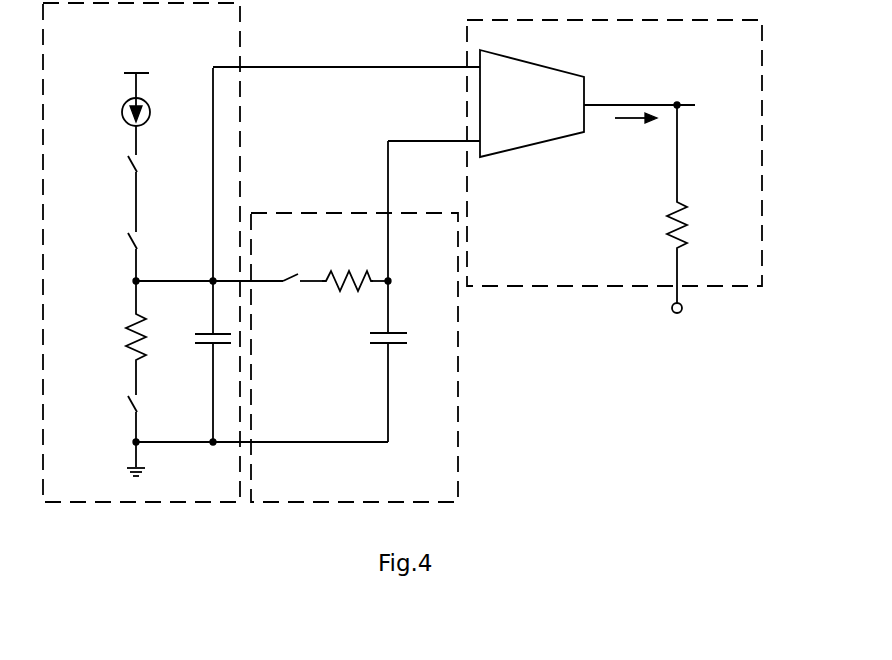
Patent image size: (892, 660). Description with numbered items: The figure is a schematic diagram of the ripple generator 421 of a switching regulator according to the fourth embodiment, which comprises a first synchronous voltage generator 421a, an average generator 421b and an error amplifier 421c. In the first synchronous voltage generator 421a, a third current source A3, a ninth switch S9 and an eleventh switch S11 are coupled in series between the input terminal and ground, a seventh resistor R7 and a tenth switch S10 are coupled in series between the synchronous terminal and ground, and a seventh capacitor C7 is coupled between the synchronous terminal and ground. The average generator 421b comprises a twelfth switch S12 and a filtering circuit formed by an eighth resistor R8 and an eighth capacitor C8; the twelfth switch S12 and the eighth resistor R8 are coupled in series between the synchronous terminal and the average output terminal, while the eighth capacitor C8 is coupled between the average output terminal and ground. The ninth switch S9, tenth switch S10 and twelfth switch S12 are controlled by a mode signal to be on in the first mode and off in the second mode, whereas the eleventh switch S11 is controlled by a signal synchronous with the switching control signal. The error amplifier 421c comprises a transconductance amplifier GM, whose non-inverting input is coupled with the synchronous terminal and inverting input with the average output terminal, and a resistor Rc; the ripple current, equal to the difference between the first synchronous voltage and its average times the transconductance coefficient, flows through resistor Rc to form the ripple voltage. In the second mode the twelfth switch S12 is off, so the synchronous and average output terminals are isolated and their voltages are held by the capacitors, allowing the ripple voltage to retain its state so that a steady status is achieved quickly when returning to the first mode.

The ripple generator 421 is at (668, 491).
The first synchronous voltage generator 421a is at (222, 33).
The average generator 421b is at (433, 491).
The error amplifier 421c is at (538, 287).
The third current source A3 is at (111, 112).
The ninth switch S9 is at (104, 165).
The tenth switch S10 is at (102, 405).
The eleventh switch S11 is at (102, 243).
The twelfth switch S12 is at (289, 263).
The seventh resistor R7 is at (109, 338).
The eighth resistor R8 is at (347, 268).
The seventh capacitor C7 is at (204, 354).
The eighth capacitor C8 is at (375, 353).
The transconductance amplifier GM is at (532, 103).
The resistor Rc is at (659, 225).